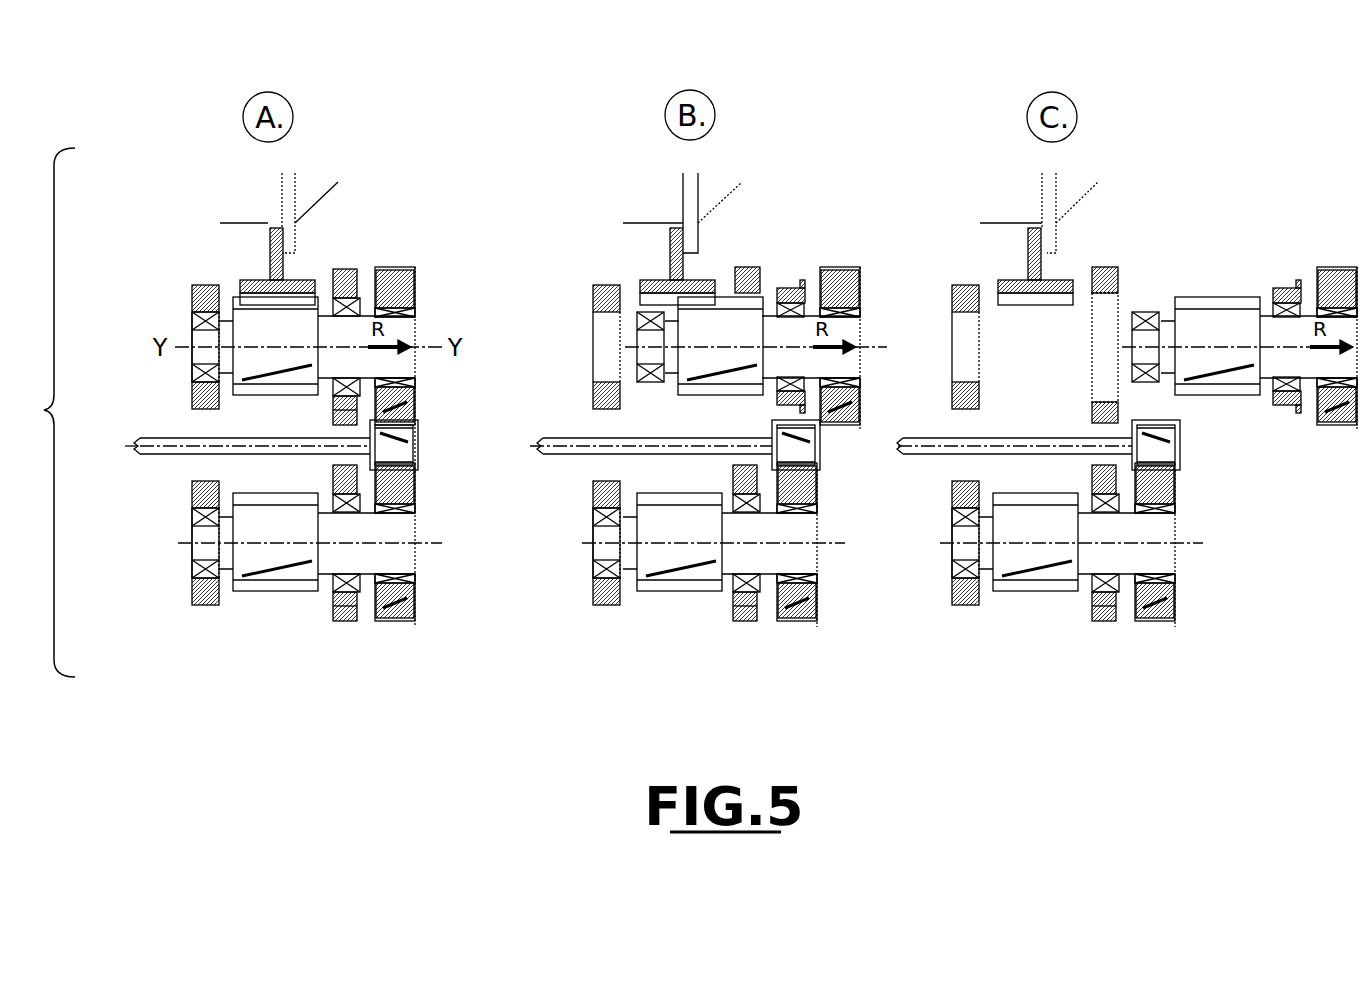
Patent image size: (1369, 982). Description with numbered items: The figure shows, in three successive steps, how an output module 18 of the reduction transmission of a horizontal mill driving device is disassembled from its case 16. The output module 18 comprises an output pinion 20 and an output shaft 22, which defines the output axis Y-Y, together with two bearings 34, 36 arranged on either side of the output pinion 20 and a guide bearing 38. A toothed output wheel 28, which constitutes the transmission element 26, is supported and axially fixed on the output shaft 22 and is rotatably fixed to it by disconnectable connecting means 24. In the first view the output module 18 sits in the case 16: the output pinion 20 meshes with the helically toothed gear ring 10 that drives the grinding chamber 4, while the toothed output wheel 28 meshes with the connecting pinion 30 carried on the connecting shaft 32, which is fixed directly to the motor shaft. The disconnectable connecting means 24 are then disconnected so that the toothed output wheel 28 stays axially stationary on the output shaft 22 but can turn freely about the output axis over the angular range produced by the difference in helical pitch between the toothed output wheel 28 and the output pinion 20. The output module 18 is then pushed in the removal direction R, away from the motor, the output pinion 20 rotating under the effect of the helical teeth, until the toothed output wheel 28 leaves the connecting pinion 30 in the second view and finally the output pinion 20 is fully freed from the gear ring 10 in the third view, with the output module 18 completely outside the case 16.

In FIG. 5A, the grinding chamber 4 is at (292, 187).
In FIG. 5B, the grinding chamber 4 is at (695, 187).
In FIG. 5C, the grinding chamber 4 is at (1058, 193).
In FIG. 5A, the gear ring 10 is at (262, 280).
In FIG. 5B, the gear ring 10 is at (672, 252).
In FIG. 5B, the case 16 is at (745, 268).
In FIG. 5C, the case 16 is at (1112, 270).
In FIG. 5C, the output module 18 is at (1030, 606).
In FIG. 5A, the output pinion 20 is at (305, 323).
In FIG. 5B, the output pinion 20 is at (668, 570).
In FIG. 5A, the output shaft 22 is at (197, 555).
In FIG. 5B, the output shaft 22 is at (850, 368).
In FIG. 5A, the disconnectable connecting means 24 is at (410, 310).
In FIG. 5B, the disconnectable connecting means 24 is at (862, 310).
In FIG. 5A, the transmission element 26 is at (393, 630).
In FIG. 5A, the toothed output wheel 28 is at (410, 287).
In FIG. 5B, the toothed output wheel 28 is at (840, 275).
In FIG. 5C, the toothed output wheel 28 is at (1172, 600).
In FIG. 5A, the connecting pinion 30 is at (413, 453).
In FIG. 5B, the connecting pinion 30 is at (812, 455).
In FIG. 5C, the connecting pinion 30 is at (1172, 450).
In FIG. 5A, the connecting shaft 32 is at (157, 450).
In FIG. 5C, the connecting shaft 32 is at (1018, 447).
In FIG. 5A, the bearing 34 is at (205, 320).
In FIG. 5A, the bearing 36 is at (365, 307).
In FIG. 5A, the guide bearing 38 is at (362, 303).
In FIG. 5B, the guide bearing 38 is at (787, 290).
In FIG. 5C, the guide bearing 38 is at (1283, 290).